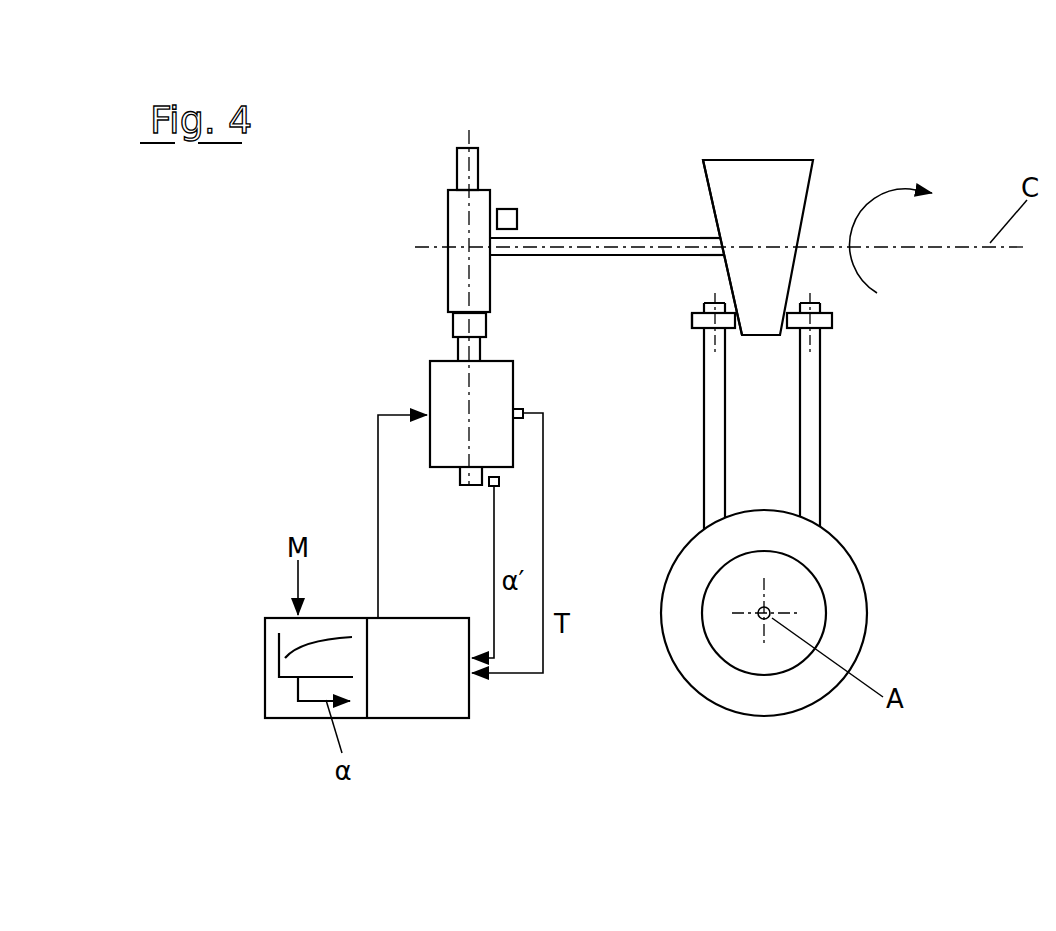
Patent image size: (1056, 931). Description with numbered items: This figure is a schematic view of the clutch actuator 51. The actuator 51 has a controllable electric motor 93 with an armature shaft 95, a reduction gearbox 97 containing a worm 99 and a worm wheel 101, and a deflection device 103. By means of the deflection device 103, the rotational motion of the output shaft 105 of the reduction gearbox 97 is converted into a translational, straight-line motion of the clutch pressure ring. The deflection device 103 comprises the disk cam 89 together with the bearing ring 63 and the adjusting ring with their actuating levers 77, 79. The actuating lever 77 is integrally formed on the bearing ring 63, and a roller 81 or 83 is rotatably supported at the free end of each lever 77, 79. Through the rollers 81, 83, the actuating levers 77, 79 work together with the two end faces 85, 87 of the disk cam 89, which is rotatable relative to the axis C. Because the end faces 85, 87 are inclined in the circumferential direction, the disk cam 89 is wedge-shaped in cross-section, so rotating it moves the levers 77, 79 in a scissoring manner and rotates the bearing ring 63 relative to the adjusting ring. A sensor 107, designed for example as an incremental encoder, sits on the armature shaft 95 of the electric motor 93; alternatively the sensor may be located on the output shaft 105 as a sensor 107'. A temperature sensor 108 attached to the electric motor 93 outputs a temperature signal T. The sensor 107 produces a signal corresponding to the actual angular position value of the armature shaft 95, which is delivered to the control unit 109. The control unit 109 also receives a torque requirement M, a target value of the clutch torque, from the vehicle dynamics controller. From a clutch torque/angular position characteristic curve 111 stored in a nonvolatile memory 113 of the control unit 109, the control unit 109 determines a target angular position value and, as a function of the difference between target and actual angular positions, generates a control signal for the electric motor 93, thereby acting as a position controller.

The actuator 51 is at (653, 750).
The bearing ring 63 is at (844, 600).
The actuating lever 77 is at (807, 423).
The actuating lever 79 is at (715, 438).
The roller 81 is at (822, 320).
The roller 83 is at (710, 320).
The end face 85 is at (820, 170).
The end face 87 is at (706, 195).
The disk cam 89 is at (748, 183).
The electric motor 93 is at (448, 380).
The armature shaft 95 is at (470, 482).
The reduction gearbox 97 is at (404, 213).
The worm 99 is at (458, 323).
The worm wheel 101 is at (462, 273).
The deflection device 103 is at (684, 274).
The output shaft 105 is at (583, 247).
The sensor 107 is at (449, 567).
The sensor 107' is at (534, 189).
The temperature sensor 108 is at (522, 410).
The control unit 109 is at (460, 707).
The clutch torque/angular position characteristic curve 111 is at (320, 667).
The nonvolatile memory 113 is at (282, 693).